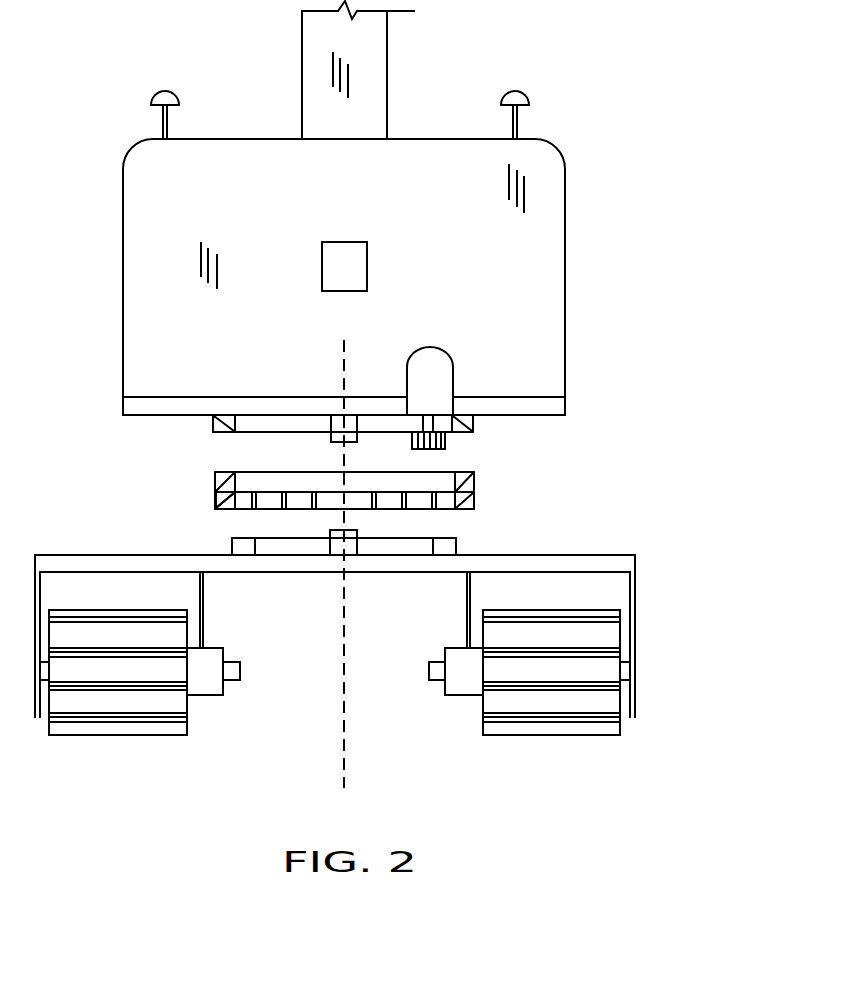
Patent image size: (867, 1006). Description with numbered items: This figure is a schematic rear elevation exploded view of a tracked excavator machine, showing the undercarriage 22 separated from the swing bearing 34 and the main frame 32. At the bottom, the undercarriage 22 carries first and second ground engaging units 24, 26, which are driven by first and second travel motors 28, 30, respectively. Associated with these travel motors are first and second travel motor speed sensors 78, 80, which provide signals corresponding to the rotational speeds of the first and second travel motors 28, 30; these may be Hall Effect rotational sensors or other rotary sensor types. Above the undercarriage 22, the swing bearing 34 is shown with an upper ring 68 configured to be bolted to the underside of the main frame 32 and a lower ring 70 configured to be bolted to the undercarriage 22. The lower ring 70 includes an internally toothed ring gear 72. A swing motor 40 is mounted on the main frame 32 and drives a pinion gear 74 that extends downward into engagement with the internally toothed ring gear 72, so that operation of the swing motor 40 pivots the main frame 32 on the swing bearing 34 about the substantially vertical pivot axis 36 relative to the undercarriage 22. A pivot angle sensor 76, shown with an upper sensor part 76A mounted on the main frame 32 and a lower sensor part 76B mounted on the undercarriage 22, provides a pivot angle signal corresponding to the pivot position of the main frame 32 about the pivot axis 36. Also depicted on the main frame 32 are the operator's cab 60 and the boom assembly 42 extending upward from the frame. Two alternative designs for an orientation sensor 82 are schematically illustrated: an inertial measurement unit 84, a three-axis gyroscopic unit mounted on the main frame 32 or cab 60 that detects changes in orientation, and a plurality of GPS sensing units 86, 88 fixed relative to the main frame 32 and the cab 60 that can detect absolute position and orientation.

The undercarriage 22 is at (649, 570).
The first ground engaging unit 24 is at (88, 727).
The second ground engaging unit 26 is at (610, 725).
The first travel motor 28 is at (203, 688).
The second travel motor 30 is at (463, 685).
The main frame 32 is at (553, 406).
The swing bearing 34 is at (351, 504).
The pivot axis 36 is at (345, 780).
The swing motor 40 is at (437, 377).
The boom assembly 42 is at (377, 87).
The operator's cab 60 is at (552, 202).
The upper ring 68 is at (215, 480).
The lower ring 70 is at (215, 500).
The internally toothed ring gear 72 is at (300, 503).
The pinion gear 74 is at (447, 440).
The pivot angle sensor 76 is at (451, 419).
The upper sensor part 76A is at (348, 420).
The lower sensor part 76B is at (352, 542).
The first travel motor speed sensor 78 is at (233, 672).
The second travel motor speed sensor 80 is at (430, 672).
The orientation sensor 82 is at (362, 169).
The inertial measurement unit 84 is at (348, 263).
The GPS sensing unit 86 is at (165, 90).
The GPS sensing unit 88 is at (515, 90).